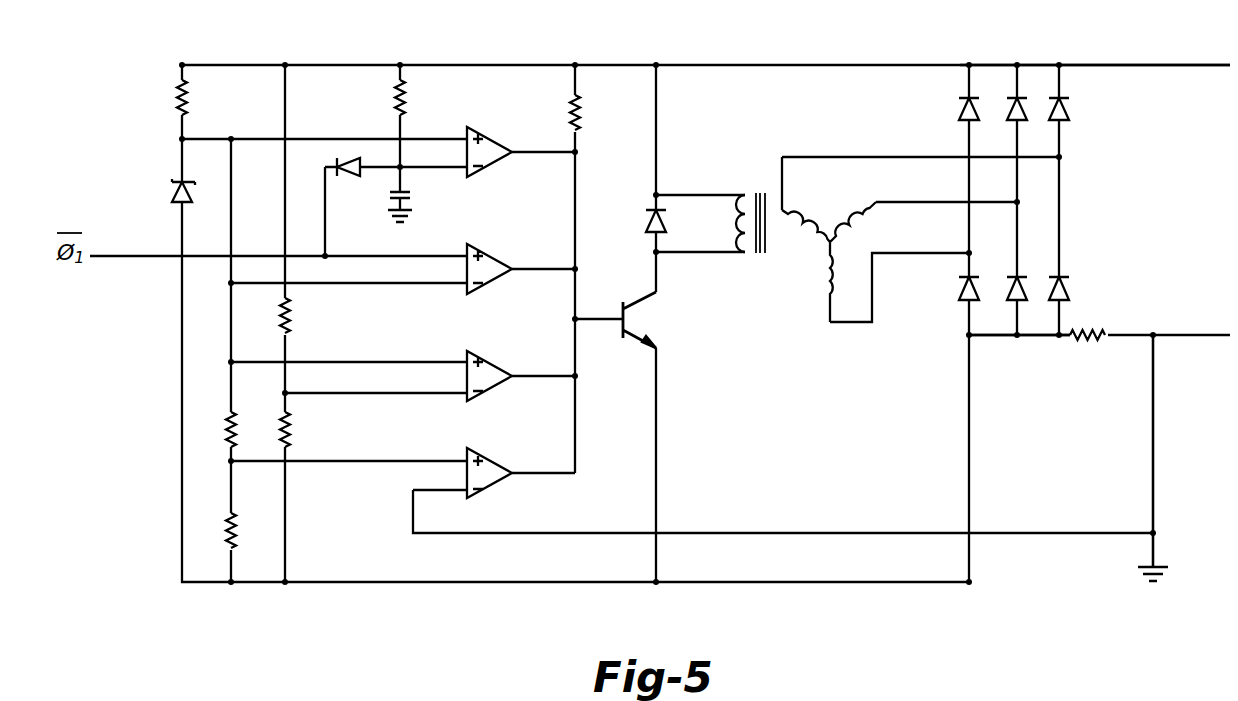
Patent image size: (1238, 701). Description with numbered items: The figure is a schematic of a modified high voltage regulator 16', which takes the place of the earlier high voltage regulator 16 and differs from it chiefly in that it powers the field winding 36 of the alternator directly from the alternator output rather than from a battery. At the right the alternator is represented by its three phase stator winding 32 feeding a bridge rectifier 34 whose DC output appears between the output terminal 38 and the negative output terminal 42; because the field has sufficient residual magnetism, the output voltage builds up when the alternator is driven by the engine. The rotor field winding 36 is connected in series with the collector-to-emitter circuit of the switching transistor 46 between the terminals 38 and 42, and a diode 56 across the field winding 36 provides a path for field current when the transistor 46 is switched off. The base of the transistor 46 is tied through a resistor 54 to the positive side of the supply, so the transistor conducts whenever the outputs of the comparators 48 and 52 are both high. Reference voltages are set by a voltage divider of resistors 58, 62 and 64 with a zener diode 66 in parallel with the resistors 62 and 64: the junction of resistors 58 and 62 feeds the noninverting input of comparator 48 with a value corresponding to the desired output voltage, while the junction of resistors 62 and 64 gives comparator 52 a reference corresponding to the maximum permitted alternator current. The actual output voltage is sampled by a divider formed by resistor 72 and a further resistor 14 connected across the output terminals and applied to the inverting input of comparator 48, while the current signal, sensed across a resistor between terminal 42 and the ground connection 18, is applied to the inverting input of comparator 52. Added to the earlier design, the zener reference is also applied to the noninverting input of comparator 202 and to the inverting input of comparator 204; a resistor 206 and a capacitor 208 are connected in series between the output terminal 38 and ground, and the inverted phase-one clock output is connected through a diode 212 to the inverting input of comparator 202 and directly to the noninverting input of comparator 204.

The resistor 14 is at (292, 432).
The high voltage regulator 16 is at (1072, 362).
The modified high voltage regulator 16' is at (419, 297).
The ground connection 18 is at (1155, 340).
The three phase stator winding 32 is at (815, 222).
The bridge rectifier 34 is at (1075, 234).
The rotor field winding 36 is at (752, 178).
The alternator output terminal 38 is at (1062, 63).
The negative output terminal 42 is at (968, 337).
The switching transistor 46 is at (622, 305).
The comparator 48 is at (495, 365).
The comparator 52 is at (495, 462).
The resistor 54 is at (583, 113).
The diode 56 is at (650, 208).
The resistor 58 is at (192, 100).
The resistor 62 is at (237, 430).
The resistor 64 is at (237, 530).
The zener diode 66 is at (175, 194).
The voltage divider resistor 72 is at (292, 322).
The comparator 202 is at (492, 140).
The comparator 204 is at (492, 256).
The resistor 206 is at (408, 102).
The capacitor 208 is at (412, 190).
The diode 212 is at (324, 160).